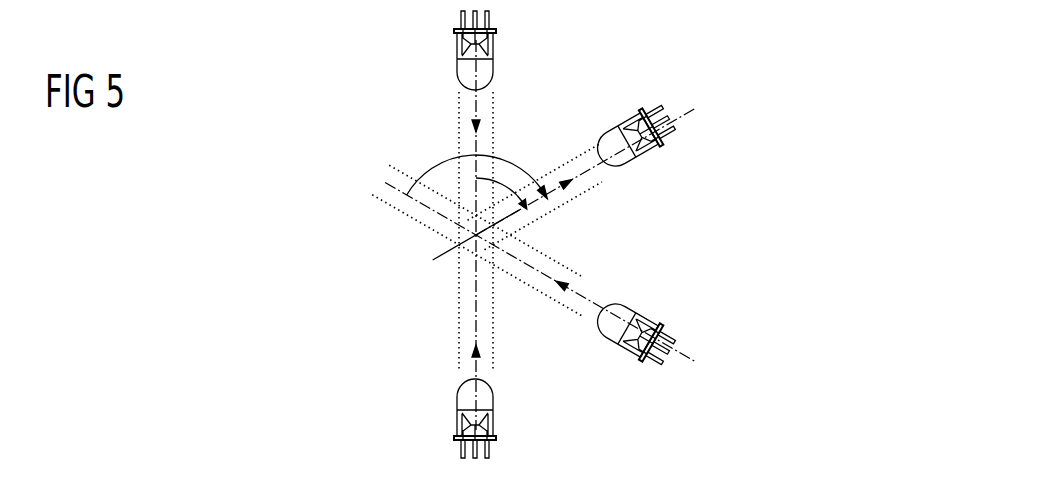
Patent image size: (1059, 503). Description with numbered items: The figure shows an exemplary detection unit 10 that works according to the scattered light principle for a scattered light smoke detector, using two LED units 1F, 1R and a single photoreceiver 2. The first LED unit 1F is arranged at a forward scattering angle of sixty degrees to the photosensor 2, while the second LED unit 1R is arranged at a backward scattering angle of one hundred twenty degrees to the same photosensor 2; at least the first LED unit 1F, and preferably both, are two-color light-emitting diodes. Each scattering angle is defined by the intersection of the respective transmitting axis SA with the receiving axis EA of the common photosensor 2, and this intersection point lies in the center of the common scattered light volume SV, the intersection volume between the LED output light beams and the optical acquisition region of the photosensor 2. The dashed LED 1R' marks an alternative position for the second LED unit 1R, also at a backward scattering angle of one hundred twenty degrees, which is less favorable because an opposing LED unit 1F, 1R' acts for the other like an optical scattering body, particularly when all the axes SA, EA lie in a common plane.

The detection unit 10 is at (688, 63).
The alternative position for the second LED unit 1R' is at (505, 58).
The first LED unit 1F is at (463, 398).
The second LED unit 1R is at (613, 333).
The photoreceiver 2 is at (621, 165).
The scattered light volume SV is at (460, 242).
The transmitting axis SA is at (470, 332).
The receiving axis EA is at (576, 178).